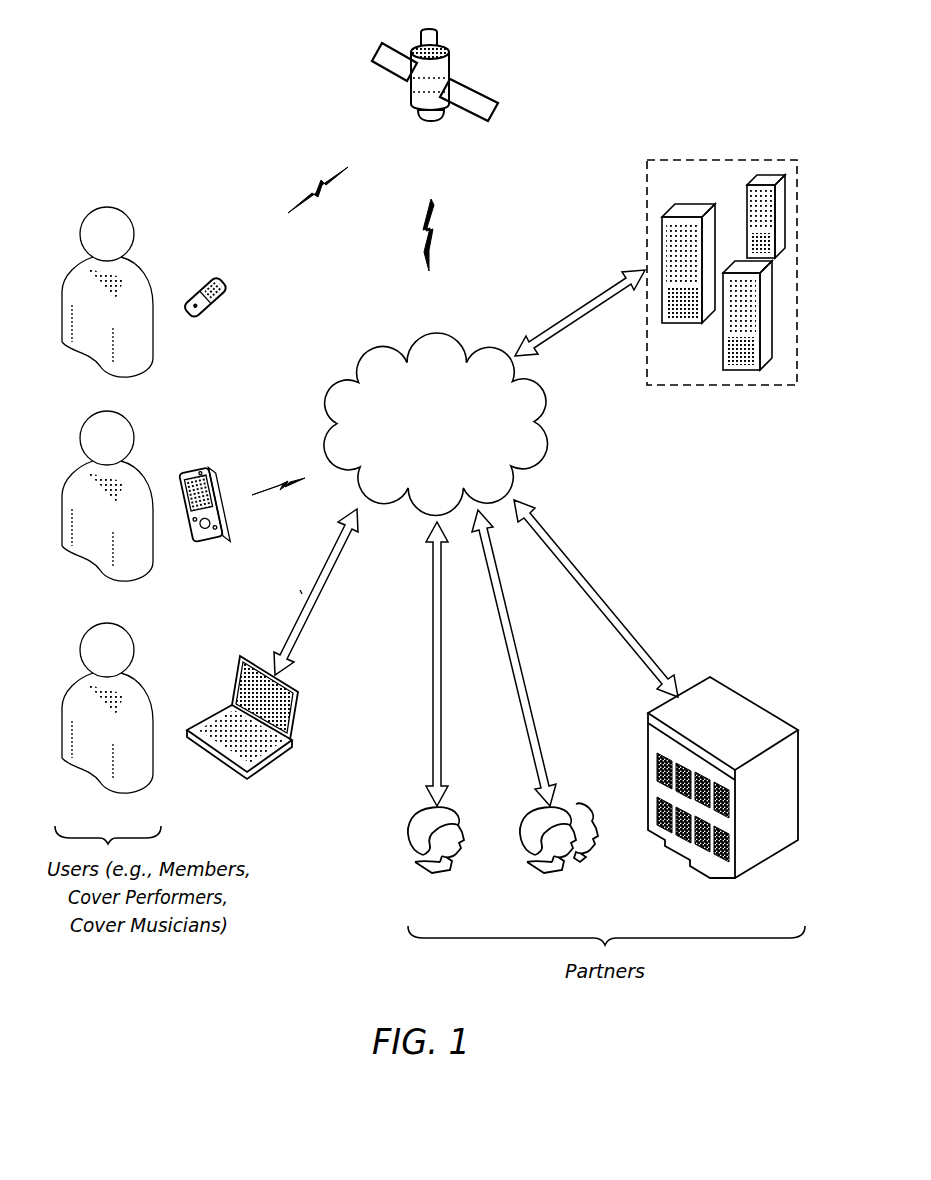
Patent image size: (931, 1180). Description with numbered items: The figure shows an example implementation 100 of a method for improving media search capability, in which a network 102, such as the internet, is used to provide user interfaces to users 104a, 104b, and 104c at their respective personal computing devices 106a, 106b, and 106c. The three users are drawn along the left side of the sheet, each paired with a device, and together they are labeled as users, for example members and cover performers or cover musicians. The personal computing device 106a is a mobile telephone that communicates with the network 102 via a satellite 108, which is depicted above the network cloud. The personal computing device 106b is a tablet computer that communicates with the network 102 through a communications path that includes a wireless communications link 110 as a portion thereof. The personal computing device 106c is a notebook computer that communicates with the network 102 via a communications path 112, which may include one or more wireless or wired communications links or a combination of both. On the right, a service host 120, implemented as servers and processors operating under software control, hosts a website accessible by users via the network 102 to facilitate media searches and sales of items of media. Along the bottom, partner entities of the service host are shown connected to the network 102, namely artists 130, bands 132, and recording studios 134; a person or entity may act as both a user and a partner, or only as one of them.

The example implementation 100 is at (150, 62).
The network 102 is at (372, 350).
The user 104a is at (128, 218).
The user 104b is at (128, 428).
The user 104c is at (128, 638).
The personal computing device 106a is at (217, 274).
The personal computing device 106b is at (208, 472).
The personal computing device 106c is at (234, 678).
The satellite 108 is at (450, 50).
The wireless communications link 110 is at (281, 480).
The communications path 112 is at (309, 592).
The service host 120 is at (708, 160).
The artists 130 is at (421, 818).
The bands 132 is at (536, 818).
The recording studios 134 is at (655, 712).